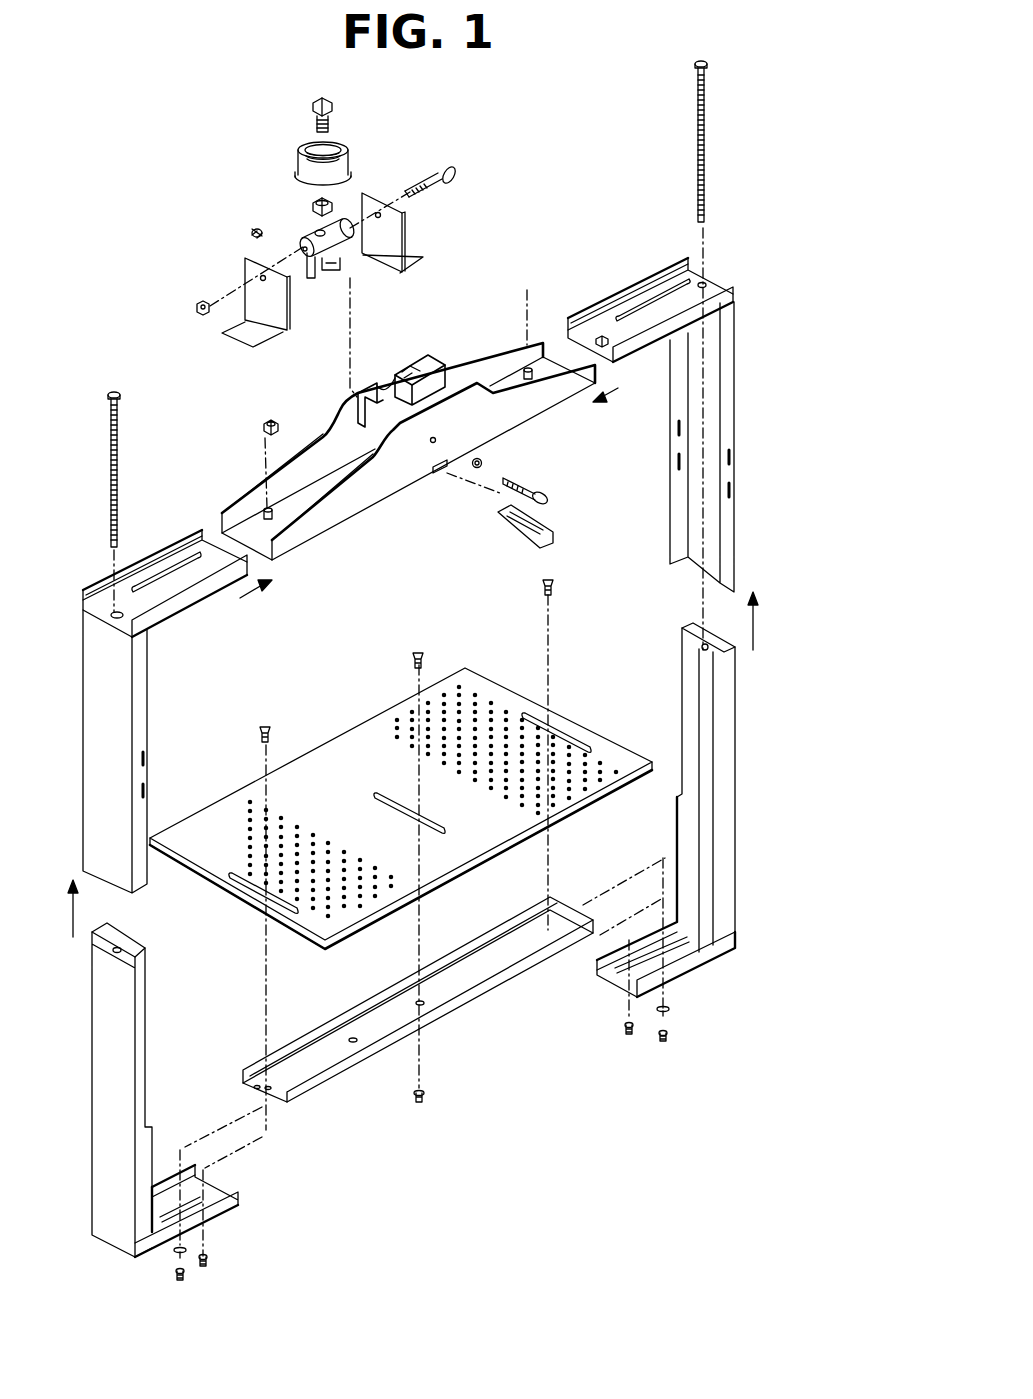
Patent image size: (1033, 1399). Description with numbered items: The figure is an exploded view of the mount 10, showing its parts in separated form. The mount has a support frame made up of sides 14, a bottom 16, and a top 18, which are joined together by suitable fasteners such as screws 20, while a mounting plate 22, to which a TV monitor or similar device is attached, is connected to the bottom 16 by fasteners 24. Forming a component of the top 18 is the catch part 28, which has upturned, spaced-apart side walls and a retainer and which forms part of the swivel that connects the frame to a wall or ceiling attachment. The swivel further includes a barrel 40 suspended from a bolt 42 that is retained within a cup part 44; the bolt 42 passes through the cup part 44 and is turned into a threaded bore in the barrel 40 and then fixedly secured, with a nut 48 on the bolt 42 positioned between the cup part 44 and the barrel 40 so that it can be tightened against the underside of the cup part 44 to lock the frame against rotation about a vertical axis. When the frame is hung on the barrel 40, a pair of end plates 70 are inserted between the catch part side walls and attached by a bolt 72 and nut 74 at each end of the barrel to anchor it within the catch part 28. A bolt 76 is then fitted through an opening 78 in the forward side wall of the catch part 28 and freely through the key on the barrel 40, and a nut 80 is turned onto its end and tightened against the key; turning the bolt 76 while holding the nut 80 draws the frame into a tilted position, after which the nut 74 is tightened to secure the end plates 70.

The mount 10 is at (583, 109).
The sides 14 is at (735, 751).
The bottom 16 is at (330, 1085).
The top 18 is at (245, 493).
The screws 20 is at (708, 140).
The mounting plate 22 is at (330, 747).
The fasteners 24 is at (265, 725).
The catch part 28 is at (368, 510).
The barrel 40 is at (303, 238).
The bolt 42 is at (313, 107).
The cup part 44 is at (300, 153).
The nut 48 is at (315, 203).
The end plates 70 is at (247, 273).
The bolt 72 is at (450, 175).
The nut 74 is at (195, 308).
The bolt 76 is at (545, 500).
The opening 78 is at (430, 445).
The nut 80 is at (253, 232).